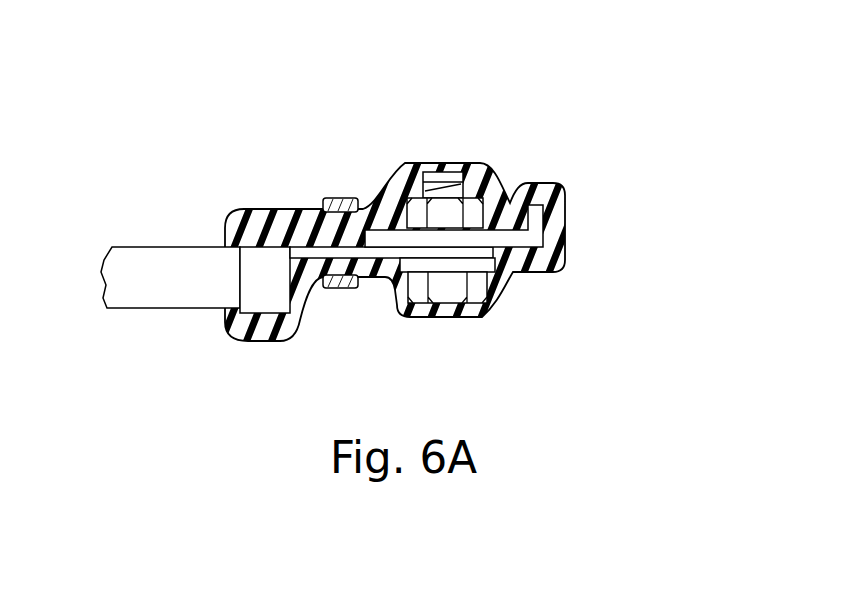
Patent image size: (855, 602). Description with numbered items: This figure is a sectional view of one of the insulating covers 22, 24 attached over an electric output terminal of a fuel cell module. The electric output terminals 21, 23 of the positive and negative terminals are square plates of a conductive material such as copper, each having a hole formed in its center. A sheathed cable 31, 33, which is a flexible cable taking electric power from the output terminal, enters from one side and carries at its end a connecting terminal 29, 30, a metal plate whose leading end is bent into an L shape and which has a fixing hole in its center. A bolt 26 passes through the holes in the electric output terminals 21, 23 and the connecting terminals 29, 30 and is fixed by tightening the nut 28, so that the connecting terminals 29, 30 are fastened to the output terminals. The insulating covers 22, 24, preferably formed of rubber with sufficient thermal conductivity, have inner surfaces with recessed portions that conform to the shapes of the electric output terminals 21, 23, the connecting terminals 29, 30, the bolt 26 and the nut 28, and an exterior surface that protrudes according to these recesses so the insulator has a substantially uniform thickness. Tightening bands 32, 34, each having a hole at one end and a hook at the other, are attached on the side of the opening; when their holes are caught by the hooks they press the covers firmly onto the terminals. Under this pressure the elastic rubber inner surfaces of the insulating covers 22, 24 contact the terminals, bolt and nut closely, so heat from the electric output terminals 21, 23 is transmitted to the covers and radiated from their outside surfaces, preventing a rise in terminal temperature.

The electric output terminal 21 is at (483, 189).
The electric output terminal 23 is at (483, 189).
The insulating cover 22 is at (489, 130).
The insulating cover 24 is at (477, 205).
The bolt 26 is at (478, 295).
The nut 28 is at (480, 210).
The connecting terminal 29 is at (546, 198).
The connecting terminal 30 is at (537, 214).
The sheathed cable 31 is at (153, 223).
The sheathed cable 33 is at (138, 247).
The tightening band 32 is at (284, 167).
The tightening band 34 is at (327, 197).